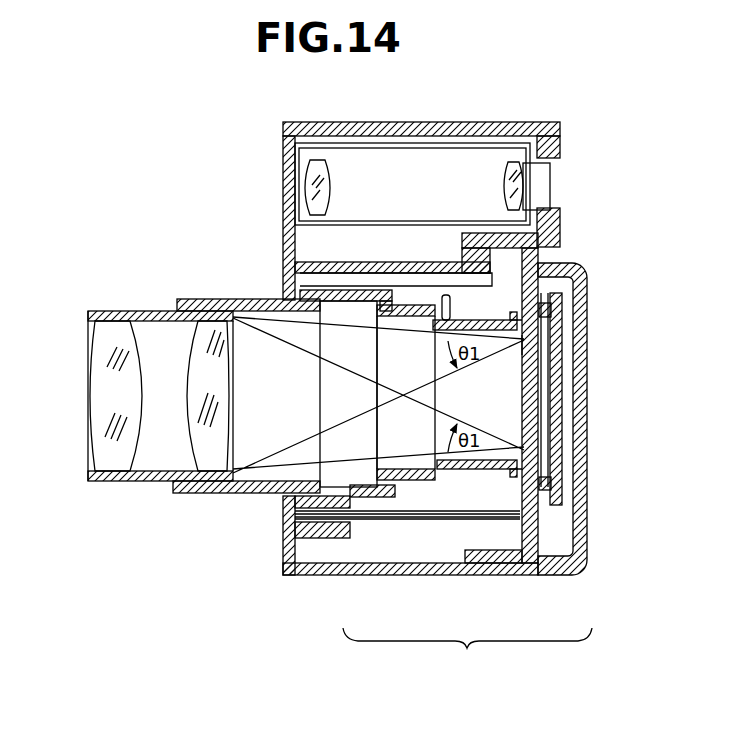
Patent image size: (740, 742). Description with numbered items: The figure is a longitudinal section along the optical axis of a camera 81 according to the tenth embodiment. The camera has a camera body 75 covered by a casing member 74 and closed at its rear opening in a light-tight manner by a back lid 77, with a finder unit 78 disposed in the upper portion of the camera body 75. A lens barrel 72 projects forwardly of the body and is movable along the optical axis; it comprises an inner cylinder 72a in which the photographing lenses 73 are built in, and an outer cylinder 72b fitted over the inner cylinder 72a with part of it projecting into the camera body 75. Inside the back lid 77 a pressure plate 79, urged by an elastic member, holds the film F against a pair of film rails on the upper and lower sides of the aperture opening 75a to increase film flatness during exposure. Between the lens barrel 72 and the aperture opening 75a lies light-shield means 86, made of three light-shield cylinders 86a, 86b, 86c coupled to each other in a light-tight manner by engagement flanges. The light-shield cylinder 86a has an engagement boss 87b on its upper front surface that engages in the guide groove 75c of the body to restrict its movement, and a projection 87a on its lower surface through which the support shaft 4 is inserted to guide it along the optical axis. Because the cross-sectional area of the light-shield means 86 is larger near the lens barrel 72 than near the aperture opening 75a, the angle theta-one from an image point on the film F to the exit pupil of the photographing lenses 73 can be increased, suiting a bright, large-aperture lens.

The camera 81 is at (170, 190).
The casing member 74 is at (340, 122).
The camera body 75 is at (477, 245).
The aperture opening 75a is at (526, 348).
The guide groove 75c is at (357, 278).
The finder unit 78 is at (415, 162).
The lens barrel 72 is at (160, 290).
The inner cylinder 72a is at (125, 310).
The outer cylinder 72b is at (205, 299).
The photographing lenses 73 is at (198, 445).
The support shaft 4 is at (353, 447).
The light-shield means 86 is at (467, 657).
The light-shield cylinder 86a is at (407, 443).
The light-shield cylinder 86b is at (424, 470).
The light-shield cylinder 86c is at (484, 440).
The projection 87a is at (292, 502).
The engagement boss 87b is at (300, 292).
The film F is at (542, 406).
The pressure plate 79 is at (563, 475).
The back lid 77 is at (587, 528).